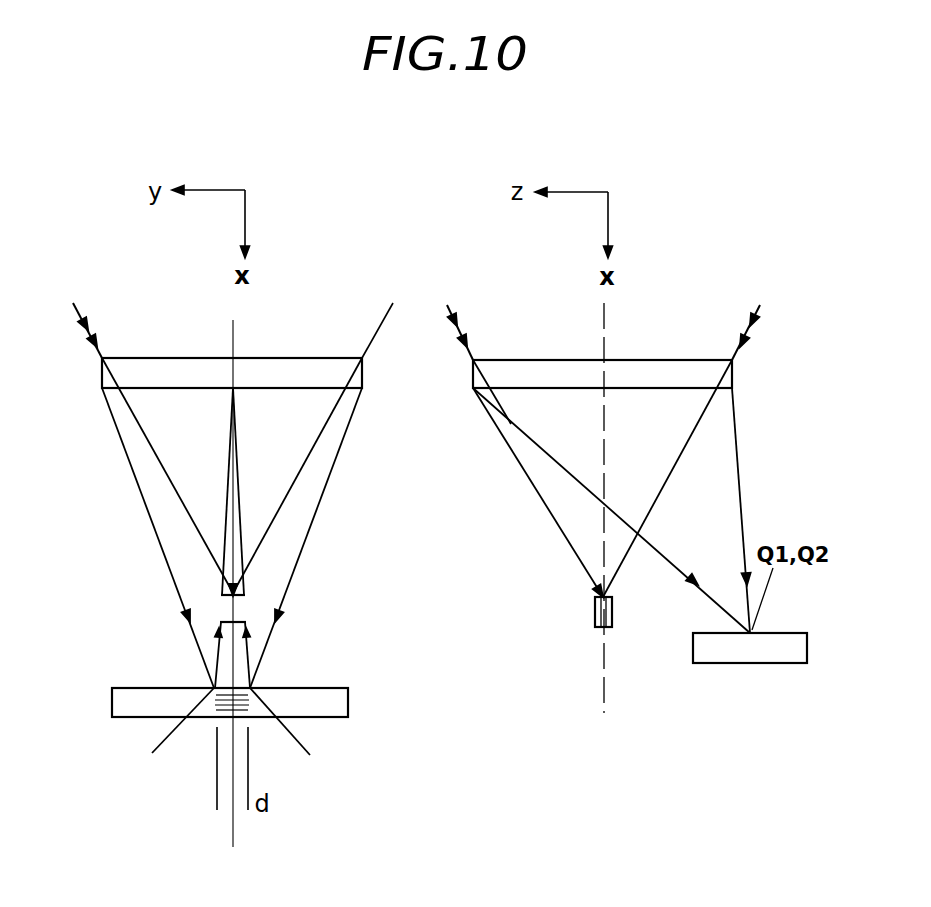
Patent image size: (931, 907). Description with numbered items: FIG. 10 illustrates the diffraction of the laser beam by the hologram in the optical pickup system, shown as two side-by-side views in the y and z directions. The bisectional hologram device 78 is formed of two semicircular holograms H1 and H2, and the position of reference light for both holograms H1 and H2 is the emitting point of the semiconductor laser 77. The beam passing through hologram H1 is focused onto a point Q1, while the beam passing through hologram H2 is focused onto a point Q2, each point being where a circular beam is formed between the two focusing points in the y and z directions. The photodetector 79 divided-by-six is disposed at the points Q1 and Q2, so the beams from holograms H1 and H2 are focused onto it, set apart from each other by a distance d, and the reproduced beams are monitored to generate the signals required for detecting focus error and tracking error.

The semiconductor laser 77 is at (593, 610).
The bisectional hologram device 78 is at (340, 370).
The photodetector divided-by-six 79 is at (705, 653).
The hologram H1 is at (338, 335).
The hologram H2 is at (145, 335).
The focusing point Q1 is at (255, 775).
The focusing point Q2 is at (210, 775).